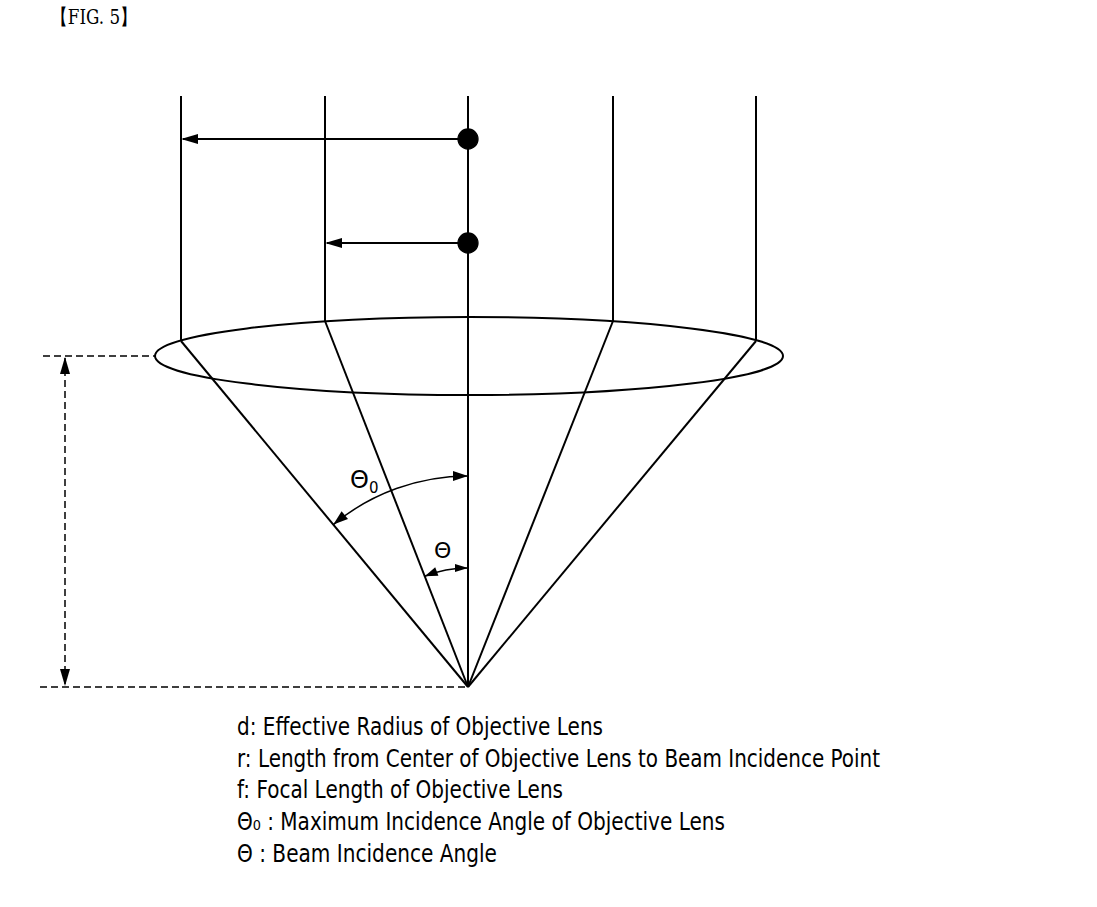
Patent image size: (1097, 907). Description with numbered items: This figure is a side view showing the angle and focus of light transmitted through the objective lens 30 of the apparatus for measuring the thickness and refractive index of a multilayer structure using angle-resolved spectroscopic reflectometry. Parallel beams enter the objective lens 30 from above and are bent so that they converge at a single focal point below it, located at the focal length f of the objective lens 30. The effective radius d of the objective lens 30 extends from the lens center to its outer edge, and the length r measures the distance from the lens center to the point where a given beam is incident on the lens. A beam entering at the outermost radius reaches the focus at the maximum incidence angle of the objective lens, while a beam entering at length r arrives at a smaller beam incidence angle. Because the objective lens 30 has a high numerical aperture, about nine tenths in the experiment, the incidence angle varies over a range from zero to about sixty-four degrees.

The objective lens 30 is at (663, 327).
The effective radius of objective lens d is at (324, 126).
The length from center of objective lens to beam incidence point r is at (396, 230).
The focal length of objective lens f is at (59, 521).